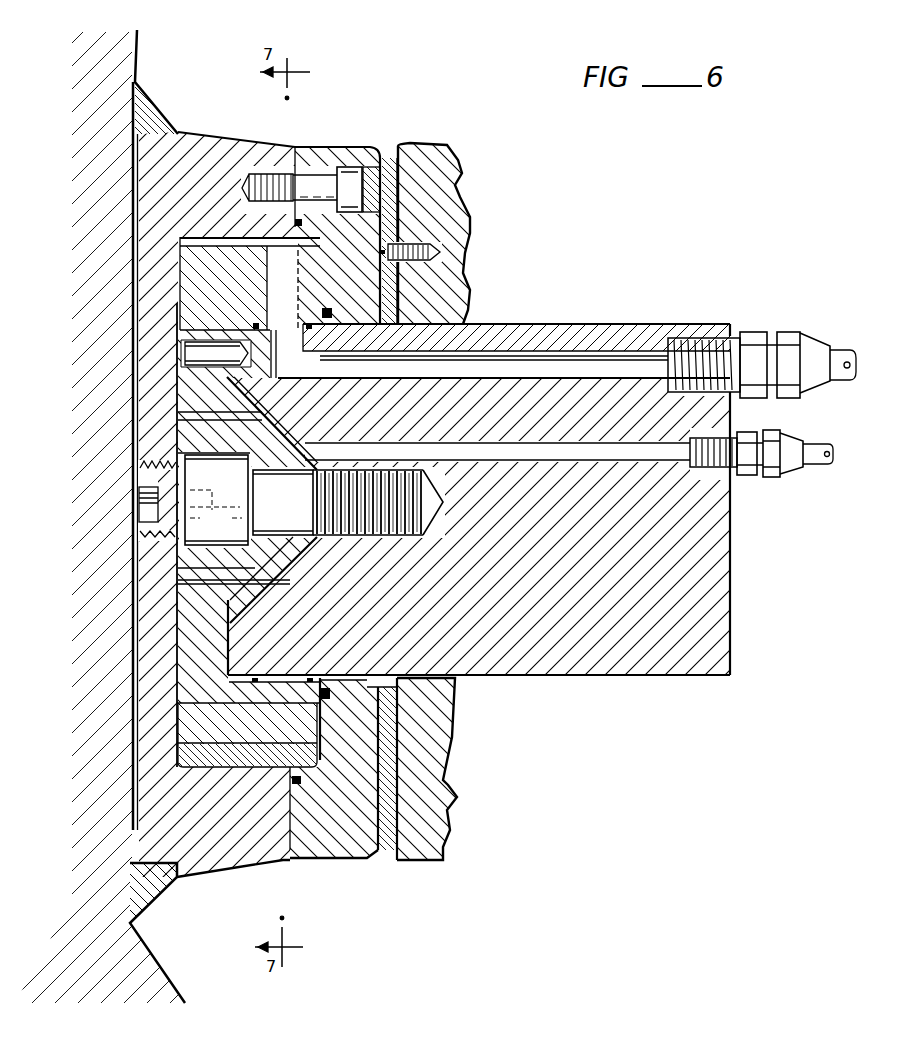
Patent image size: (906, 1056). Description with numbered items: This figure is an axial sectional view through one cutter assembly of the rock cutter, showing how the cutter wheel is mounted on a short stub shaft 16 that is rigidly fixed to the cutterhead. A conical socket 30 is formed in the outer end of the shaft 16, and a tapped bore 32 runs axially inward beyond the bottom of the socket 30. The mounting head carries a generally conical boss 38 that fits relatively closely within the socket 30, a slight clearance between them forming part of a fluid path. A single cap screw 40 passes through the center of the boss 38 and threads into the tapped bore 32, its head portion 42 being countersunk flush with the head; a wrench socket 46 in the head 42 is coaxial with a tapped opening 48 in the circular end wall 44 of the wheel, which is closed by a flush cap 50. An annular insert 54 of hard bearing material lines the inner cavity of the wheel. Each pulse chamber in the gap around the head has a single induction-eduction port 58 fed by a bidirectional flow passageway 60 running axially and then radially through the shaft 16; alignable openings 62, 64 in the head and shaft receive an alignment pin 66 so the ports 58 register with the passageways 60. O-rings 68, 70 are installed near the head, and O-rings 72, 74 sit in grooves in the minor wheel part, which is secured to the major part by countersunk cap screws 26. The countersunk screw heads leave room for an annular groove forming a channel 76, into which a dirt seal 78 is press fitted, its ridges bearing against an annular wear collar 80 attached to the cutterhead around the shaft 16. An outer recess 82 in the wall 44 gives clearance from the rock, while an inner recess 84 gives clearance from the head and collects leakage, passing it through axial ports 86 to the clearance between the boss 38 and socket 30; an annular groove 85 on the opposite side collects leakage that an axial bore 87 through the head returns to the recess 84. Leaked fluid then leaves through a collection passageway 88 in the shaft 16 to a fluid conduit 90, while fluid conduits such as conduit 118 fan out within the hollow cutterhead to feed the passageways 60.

The stub shaft 16 is at (712, 634).
The cap screws 26 is at (322, 187).
The conical socket 30 is at (205, 570).
The tapped bore 32 is at (338, 512).
The conical boss 38 is at (190, 583).
The cap screw 40 is at (333, 484).
The head portion of cap screw 42 is at (216, 500).
The circular end wall of cutter wheel 44 is at (147, 700).
The wrench socket 46 is at (140, 477).
The opening 48 is at (147, 530).
The flush cap 50 is at (160, 468).
The annular insert (bearing ring) 54 is at (240, 767).
The induction-eduction port 58 is at (250, 283).
The bidirectional flow passageway 60 is at (570, 357).
The opening in mounting head 62 is at (200, 343).
The opening in shaft 64 is at (270, 352).
The alignment pin 66 is at (197, 362).
The O-ring 68 is at (262, 327).
The O-ring 70 is at (314, 335).
The O-ring 72 is at (333, 698).
The O-ring 74 is at (300, 768).
The plate 76 is at (382, 198).
The dirt seal 78 is at (357, 166).
The annular wear collar 80 is at (392, 748).
The outer recess 82 is at (135, 738).
The inner recess 84 is at (153, 620).
The annular groove 85 is at (392, 727).
The axial ports 86 is at (172, 600).
The axial bore 87 is at (265, 697).
The collection passageway 88 is at (672, 457).
The fluid conduit 90 is at (816, 466).
The fluid conduit 118 is at (845, 350).